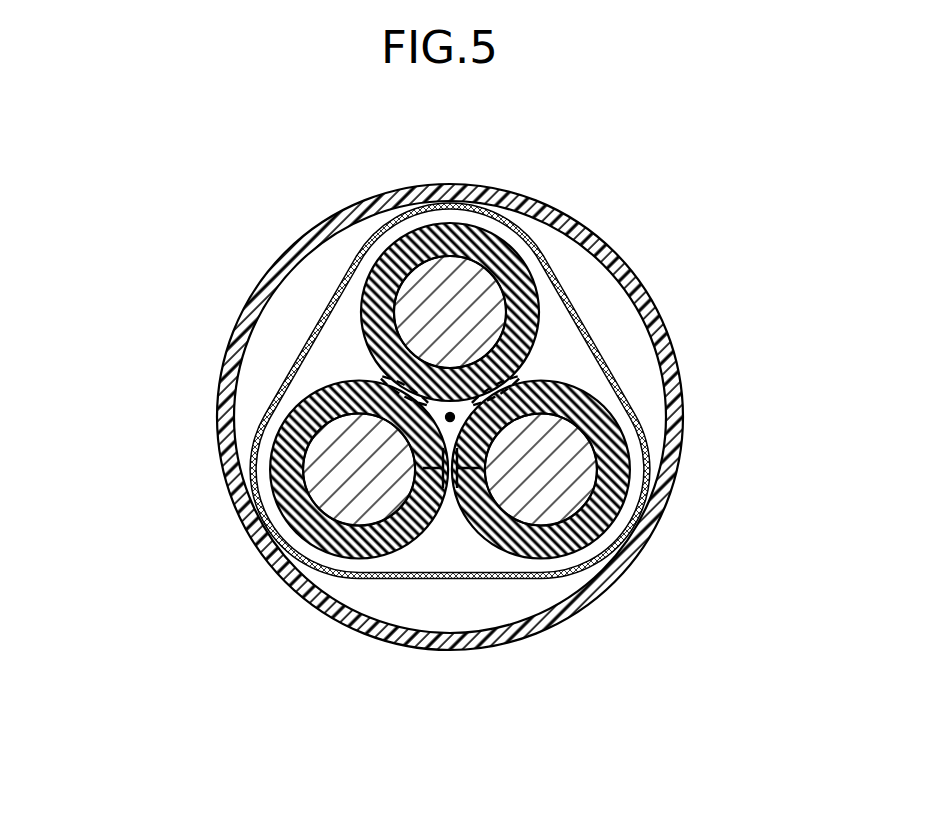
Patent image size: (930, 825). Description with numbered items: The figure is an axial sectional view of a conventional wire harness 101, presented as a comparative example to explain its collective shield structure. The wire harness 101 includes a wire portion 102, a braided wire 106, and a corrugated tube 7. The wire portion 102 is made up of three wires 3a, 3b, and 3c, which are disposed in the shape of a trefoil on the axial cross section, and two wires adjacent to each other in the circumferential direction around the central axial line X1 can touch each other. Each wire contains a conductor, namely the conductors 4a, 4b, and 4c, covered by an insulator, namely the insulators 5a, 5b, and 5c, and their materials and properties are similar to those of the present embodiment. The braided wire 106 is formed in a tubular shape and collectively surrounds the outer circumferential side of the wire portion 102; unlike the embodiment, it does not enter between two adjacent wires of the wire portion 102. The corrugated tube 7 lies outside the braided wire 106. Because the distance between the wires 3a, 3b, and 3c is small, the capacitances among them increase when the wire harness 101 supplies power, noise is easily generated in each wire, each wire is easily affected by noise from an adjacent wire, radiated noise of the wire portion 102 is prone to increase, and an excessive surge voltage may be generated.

The wire harness 101 is at (198, 167).
The corrugated tube 7 is at (678, 478).
The braided wire 106 is at (383, 588).
The wire portion 102 is at (425, 385).
The wire 3a is at (375, 142).
The conductor 4a is at (433, 270).
The insulator 5a is at (385, 283).
The wire 3b is at (148, 467).
The conductor 4b is at (343, 480).
The insulator 5b is at (288, 470).
The wire 3c is at (724, 552).
The conductor 4c is at (553, 507).
The insulator 5c is at (598, 524).
The central axial line X1 is at (452, 418).